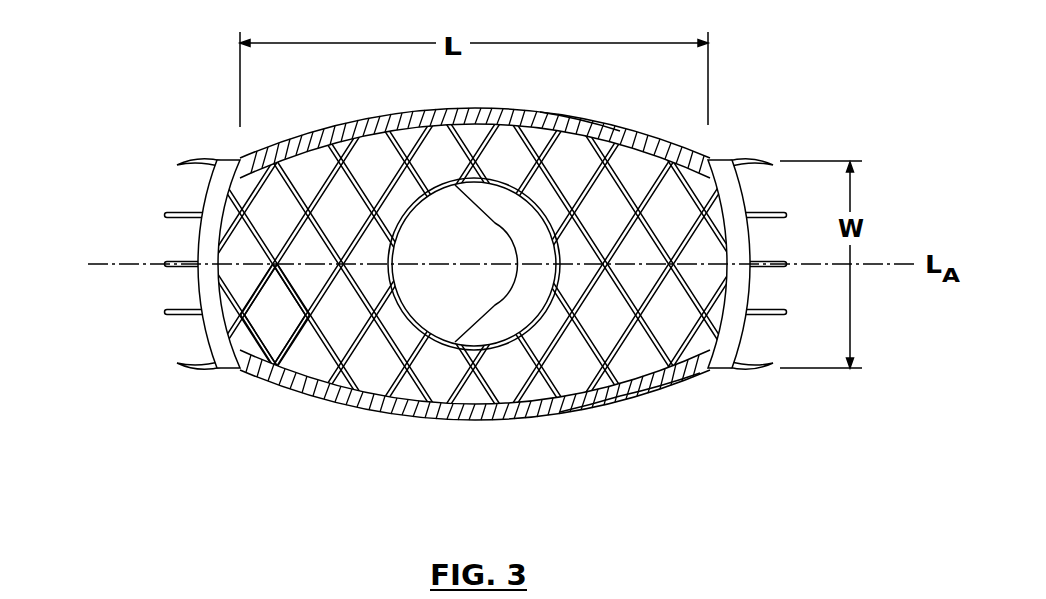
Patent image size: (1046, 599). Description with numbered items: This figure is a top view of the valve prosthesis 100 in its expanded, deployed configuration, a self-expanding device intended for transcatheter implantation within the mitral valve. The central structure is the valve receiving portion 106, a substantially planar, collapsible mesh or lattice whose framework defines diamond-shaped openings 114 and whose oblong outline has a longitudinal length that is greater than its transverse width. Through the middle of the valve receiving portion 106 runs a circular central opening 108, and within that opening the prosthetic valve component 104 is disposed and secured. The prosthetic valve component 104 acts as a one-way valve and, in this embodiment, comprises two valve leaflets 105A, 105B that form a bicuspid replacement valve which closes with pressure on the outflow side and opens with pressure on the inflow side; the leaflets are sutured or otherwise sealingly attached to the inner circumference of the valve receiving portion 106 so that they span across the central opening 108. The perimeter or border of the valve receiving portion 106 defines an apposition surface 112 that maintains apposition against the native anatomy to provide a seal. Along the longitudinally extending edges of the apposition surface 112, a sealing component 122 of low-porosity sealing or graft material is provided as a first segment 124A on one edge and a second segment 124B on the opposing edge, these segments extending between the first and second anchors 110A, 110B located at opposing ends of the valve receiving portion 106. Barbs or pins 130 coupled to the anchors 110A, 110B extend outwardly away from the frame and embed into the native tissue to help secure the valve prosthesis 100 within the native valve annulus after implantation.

The valve prosthesis 100 is at (137, 150).
The prosthetic valve component 104 is at (501, 315).
The valve leaflet 105A is at (430, 227).
The valve leaflet 105B is at (522, 218).
The valve receiving portion 106 is at (492, 293).
The central opening 108 is at (415, 398).
The first anchor 110A is at (200, 240).
The second anchor 110B is at (735, 330).
The apposition surface 112 is at (258, 166).
The diamond-shaped openings 114 is at (268, 330).
The sealing component 122 is at (643, 395).
The first segment 124A is at (570, 126).
The second segment 124B is at (592, 397).
The barbs or pins 130 is at (748, 152).